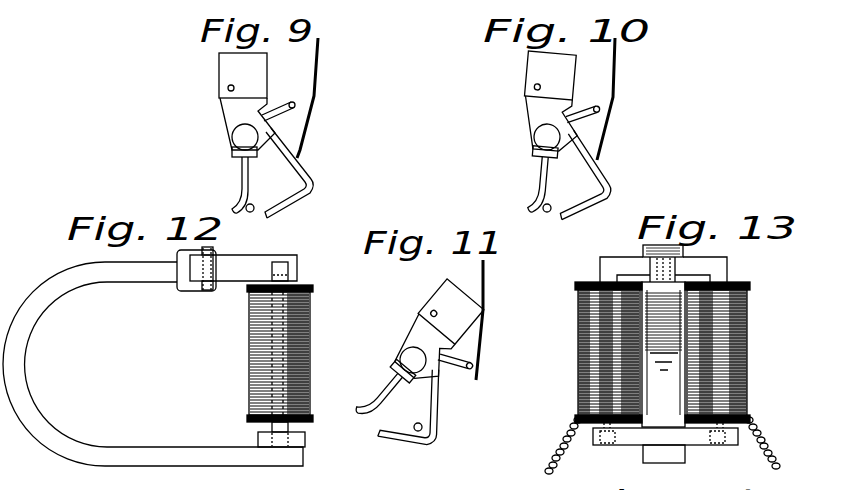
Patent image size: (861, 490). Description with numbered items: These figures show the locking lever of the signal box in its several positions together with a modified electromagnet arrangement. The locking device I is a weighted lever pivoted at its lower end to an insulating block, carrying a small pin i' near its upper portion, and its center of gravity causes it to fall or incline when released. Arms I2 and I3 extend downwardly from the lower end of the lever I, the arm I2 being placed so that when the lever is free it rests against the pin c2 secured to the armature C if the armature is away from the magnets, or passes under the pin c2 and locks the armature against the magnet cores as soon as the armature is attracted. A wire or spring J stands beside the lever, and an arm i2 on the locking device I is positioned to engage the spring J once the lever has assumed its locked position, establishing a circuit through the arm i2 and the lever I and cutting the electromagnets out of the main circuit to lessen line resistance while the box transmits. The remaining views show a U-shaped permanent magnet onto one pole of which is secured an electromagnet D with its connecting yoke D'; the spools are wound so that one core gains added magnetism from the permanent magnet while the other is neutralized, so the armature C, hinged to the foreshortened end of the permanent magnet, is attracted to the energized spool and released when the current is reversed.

In FIG. 9, the locking device I is at (247, 105).
In FIG. 10, the locking device I is at (551, 105).
In FIG. 11, the locking device I is at (435, 337).
In FIG. 9, the pivot pin of lever block i' is at (208, 98).
In FIG. 10, the pivot pin of lever block i' is at (509, 99).
In FIG. 11, the pivot pin of lever block i' is at (409, 308).
In FIG. 9, the arm i2 is at (303, 112).
In FIG. 10, the arm i2 is at (585, 115).
In FIG. 11, the arm i2 is at (454, 362).
In FIG. 9, the arm I2 is at (312, 181).
In FIG. 10, the arm I2 is at (588, 177).
In FIG. 11, the arm I2 is at (433, 403).
In FIG. 9, the arm I3 is at (243, 183).
In FIG. 10, the arm I3 is at (543, 181).
In FIG. 11, the arm I3 is at (392, 382).
In FIG. 9, the pin c2 is at (253, 212).
In FIG. 10, the pin c2 is at (549, 215).
In FIG. 11, the pin c2 is at (419, 432).
In FIG. 9, the wire or spring J is at (320, 80).
In FIG. 10, the wire or spring J is at (619, 80).
In FIG. 12, the armature C is at (240, 277).
In FIG. 12, the electromagnets D is at (261, 353).
In FIG. 13, the electromagnets D is at (679, 352).
In FIG. 12, the connecting-yoke D' is at (299, 438).
In FIG. 13, the connecting-yoke D' is at (665, 445).